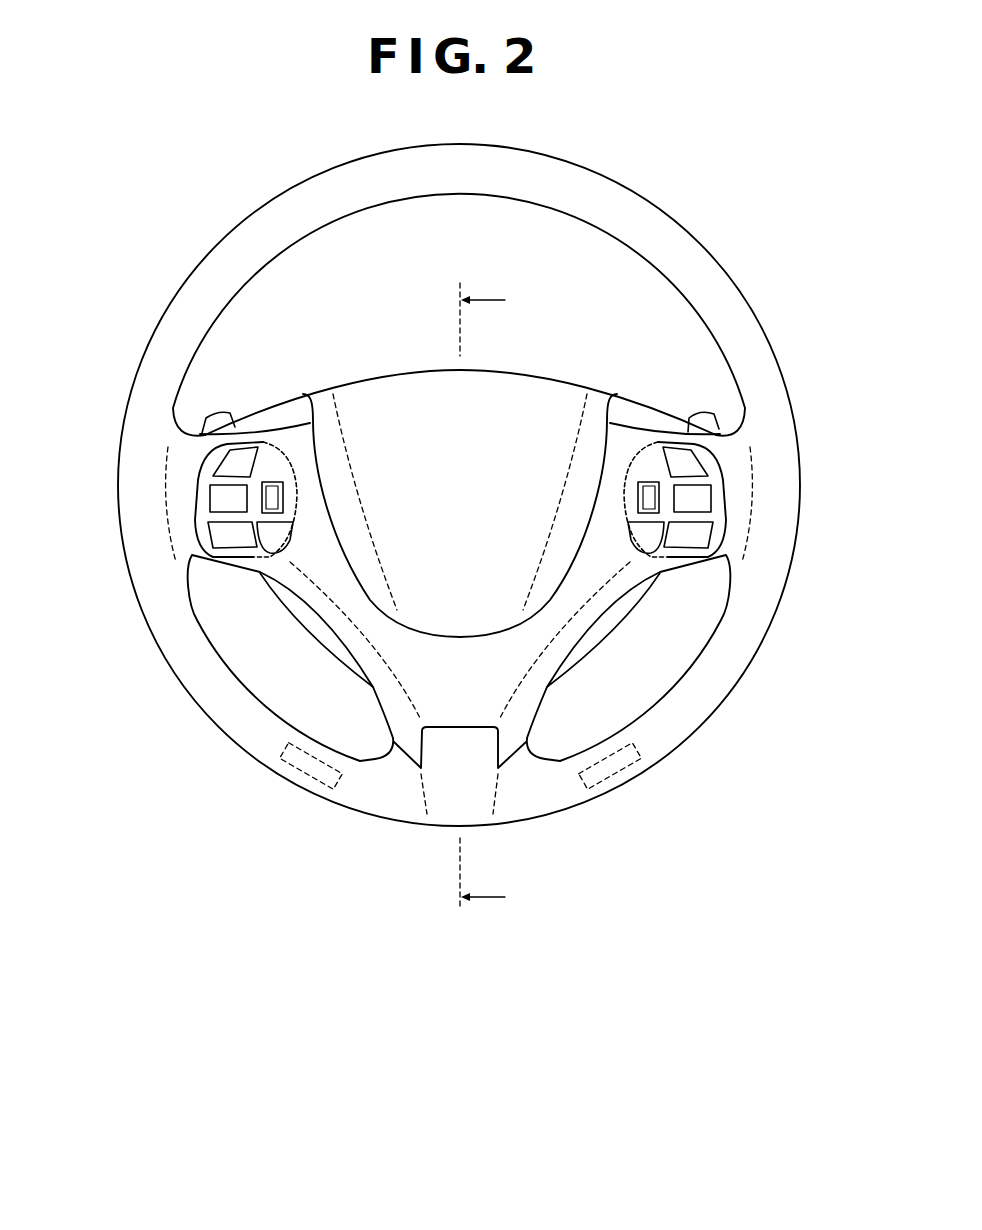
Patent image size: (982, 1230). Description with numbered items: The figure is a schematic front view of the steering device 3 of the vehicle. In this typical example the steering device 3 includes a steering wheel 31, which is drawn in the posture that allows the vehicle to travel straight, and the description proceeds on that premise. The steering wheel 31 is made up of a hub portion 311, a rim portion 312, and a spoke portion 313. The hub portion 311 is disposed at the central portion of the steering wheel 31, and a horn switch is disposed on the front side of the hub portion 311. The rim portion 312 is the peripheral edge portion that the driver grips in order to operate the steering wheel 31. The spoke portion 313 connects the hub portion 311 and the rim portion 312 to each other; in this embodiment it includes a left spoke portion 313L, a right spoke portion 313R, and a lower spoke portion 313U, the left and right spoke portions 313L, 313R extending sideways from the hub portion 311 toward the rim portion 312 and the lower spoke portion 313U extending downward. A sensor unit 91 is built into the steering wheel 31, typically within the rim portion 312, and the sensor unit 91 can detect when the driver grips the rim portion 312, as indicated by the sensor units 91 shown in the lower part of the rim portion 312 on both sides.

The steering device 3 is at (207, 968).
The steering wheel 31 is at (276, 924).
The hub portion 311 is at (542, 420).
The rim portion 312 is at (652, 200).
The spoke portion 313 is at (827, 818).
The left spoke portion 313L is at (227, 498).
The right spoke portion 313R is at (694, 498).
The lower spoke portion 313U is at (493, 696).
The sensor unit 91 is at (287, 780).